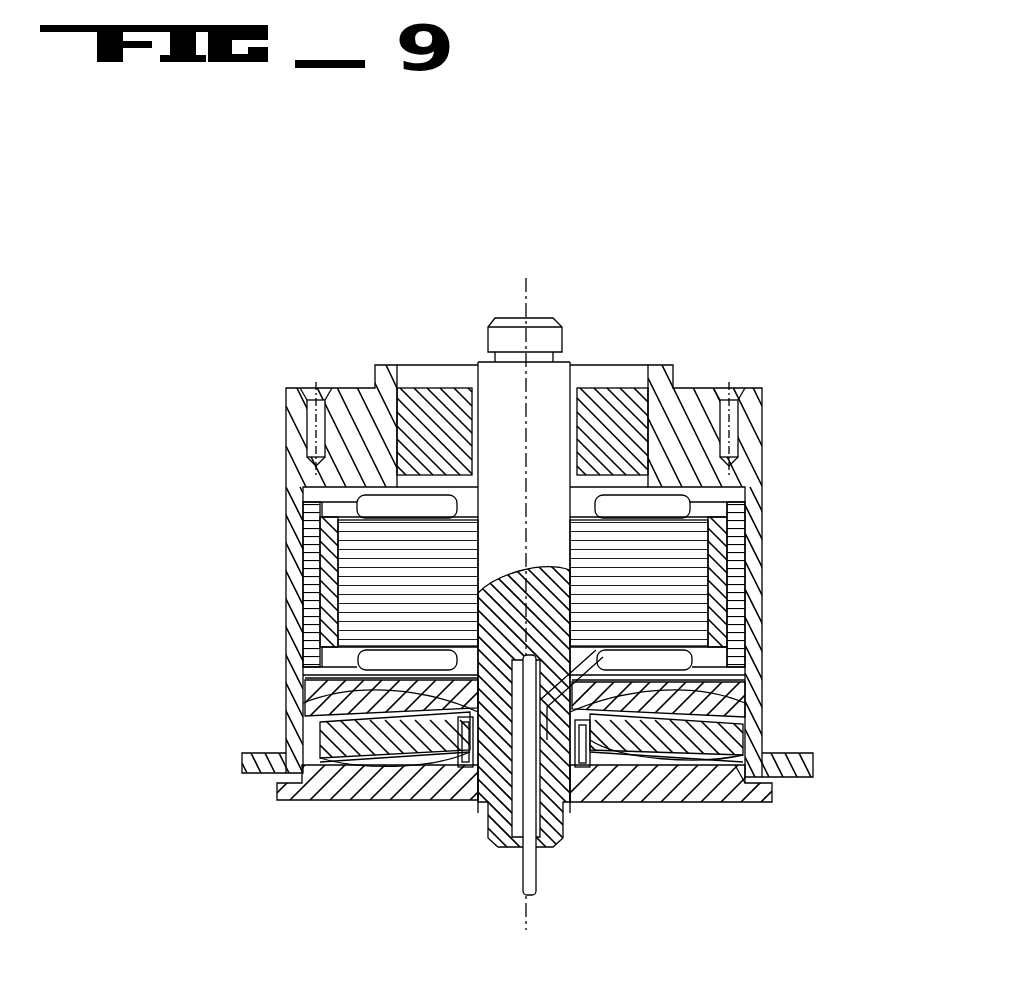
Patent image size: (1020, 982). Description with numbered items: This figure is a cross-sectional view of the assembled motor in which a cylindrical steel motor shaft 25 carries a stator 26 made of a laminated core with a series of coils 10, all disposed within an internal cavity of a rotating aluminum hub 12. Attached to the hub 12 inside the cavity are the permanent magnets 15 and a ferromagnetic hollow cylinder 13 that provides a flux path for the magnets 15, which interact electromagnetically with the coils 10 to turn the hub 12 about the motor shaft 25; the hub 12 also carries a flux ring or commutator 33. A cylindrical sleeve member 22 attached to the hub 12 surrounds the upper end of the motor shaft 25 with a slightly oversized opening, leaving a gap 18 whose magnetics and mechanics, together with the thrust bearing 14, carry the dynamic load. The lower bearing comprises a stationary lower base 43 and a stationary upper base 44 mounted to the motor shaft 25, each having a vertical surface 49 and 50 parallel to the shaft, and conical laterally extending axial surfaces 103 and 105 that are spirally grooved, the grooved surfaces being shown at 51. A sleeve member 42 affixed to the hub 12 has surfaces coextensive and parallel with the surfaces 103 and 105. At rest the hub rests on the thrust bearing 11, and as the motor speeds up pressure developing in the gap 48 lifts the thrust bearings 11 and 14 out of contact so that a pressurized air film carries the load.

The coils 10 is at (668, 660).
The thrust bearing 11 is at (468, 770).
The hub 12 is at (358, 388).
The hollow cylinder 13 is at (735, 520).
The thrust bearing 14 is at (430, 683).
The permanent magnets 15 is at (718, 562).
The gap 18 is at (457, 378).
The cylindrical sleeve member 22 is at (415, 390).
The motor shaft 25 is at (508, 316).
The stator 26 is at (690, 598).
The flux ring or commutator 33 is at (258, 780).
The sleeve member 42 is at (320, 738).
The lower base 43 is at (398, 790).
The upper base 44 is at (320, 700).
The gap 48 is at (318, 760).
The vertical surface 49 is at (598, 760).
The vertical surface 50 is at (445, 757).
The spirally grooved surfaces 51 is at (357, 757).
The laterally extending axial surface 103 is at (737, 775).
The laterally extending axial surface 105 is at (745, 724).